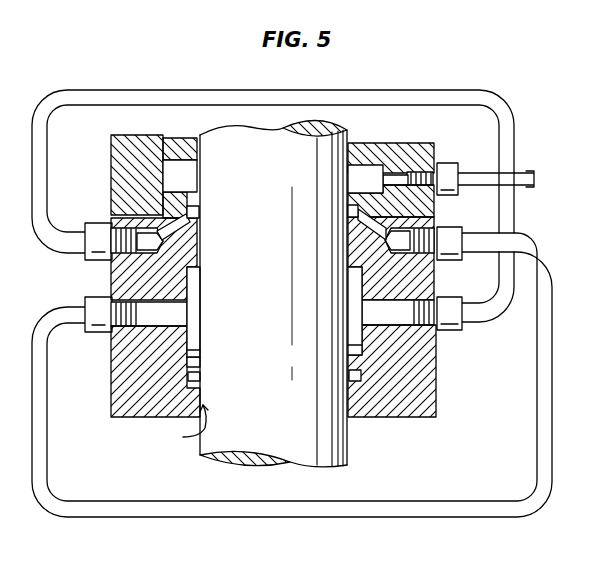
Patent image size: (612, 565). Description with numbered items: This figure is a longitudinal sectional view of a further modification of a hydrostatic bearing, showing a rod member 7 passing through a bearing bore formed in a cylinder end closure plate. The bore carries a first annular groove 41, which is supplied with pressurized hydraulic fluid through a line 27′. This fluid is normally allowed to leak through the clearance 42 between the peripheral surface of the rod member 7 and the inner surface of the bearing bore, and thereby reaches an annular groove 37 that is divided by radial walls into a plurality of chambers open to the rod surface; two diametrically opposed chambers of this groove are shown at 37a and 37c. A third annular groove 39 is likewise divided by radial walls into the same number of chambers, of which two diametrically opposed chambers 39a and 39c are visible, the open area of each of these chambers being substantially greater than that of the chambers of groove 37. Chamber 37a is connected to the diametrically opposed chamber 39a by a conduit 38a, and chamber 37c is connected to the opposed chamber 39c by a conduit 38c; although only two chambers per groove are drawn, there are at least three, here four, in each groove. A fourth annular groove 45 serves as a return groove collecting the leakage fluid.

The conduit 38a is at (380, 101).
The conduit 38c is at (458, 508).
The line 27′ is at (479, 176).
The first annular groove 41 is at (188, 181).
The annular groove 37 is at (350, 213).
The chamber 37a is at (194, 213).
The chamber 37c is at (348, 212).
The third annular groove 39 is at (353, 310).
The chamber 39c is at (194, 342).
The chamber 39a is at (347, 353).
The fourth annular groove 45 is at (356, 379).
The rod member 7 is at (338, 448).
The clearance 42 is at (343, 200).